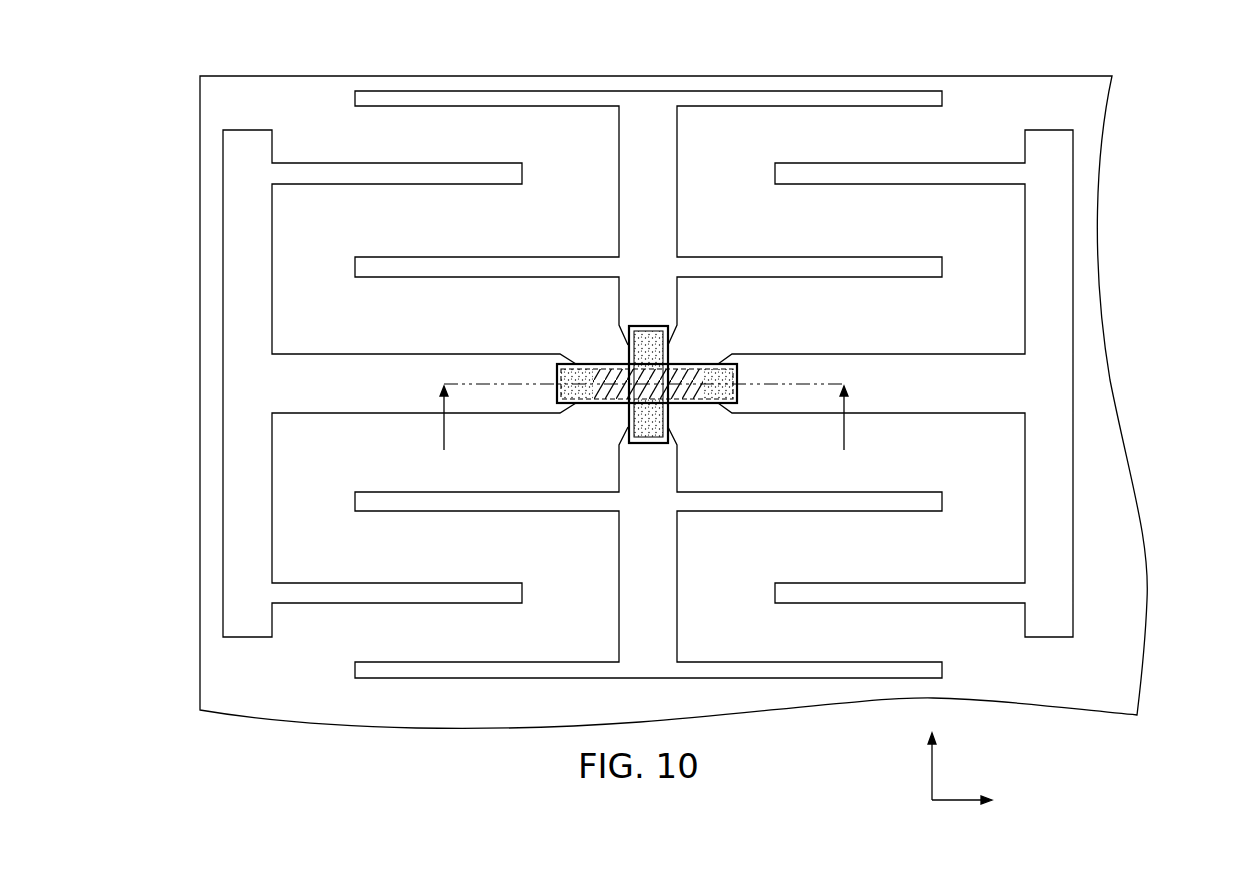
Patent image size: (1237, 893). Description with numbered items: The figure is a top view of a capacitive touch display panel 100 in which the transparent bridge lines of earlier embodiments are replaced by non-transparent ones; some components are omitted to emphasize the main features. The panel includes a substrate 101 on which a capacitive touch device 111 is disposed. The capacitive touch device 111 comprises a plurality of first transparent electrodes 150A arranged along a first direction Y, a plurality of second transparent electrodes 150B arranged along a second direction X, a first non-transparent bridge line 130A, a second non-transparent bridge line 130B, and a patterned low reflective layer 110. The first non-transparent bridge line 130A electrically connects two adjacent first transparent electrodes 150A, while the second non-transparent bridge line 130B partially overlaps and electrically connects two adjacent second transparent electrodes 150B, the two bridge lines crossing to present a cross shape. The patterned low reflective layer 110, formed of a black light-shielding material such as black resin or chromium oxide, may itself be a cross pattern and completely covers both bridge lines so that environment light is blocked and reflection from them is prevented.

The capacitive touch display panel 100 is at (717, 426).
The substrate 101 is at (1098, 182).
The patterned low reflective layer 110 is at (665, 390).
The capacitive touch device 111 is at (947, 99).
The first non-transparent bridge line 130A is at (657, 358).
The second non-transparent bridge line 130B is at (683, 398).
The first transparent electrodes 150A is at (662, 232).
The second transparent electrodes 150B is at (246, 628).